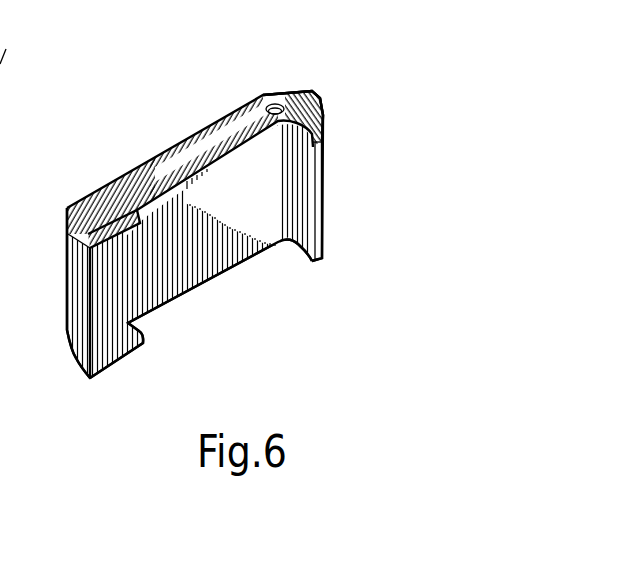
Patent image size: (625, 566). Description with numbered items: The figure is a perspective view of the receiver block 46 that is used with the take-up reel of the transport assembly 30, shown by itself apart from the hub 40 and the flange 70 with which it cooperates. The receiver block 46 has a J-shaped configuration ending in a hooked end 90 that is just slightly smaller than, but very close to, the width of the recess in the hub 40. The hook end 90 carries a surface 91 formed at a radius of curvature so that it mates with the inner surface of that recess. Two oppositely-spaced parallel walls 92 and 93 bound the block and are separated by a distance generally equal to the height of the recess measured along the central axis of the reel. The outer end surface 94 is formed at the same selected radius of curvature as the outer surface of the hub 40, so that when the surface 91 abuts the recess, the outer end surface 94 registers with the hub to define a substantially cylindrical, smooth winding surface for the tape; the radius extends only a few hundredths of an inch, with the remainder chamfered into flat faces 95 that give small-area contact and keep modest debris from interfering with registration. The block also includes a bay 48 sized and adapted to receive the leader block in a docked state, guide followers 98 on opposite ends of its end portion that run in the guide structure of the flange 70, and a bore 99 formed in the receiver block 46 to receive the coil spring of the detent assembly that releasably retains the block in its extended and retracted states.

The transport assembly 30 is at (0, 70).
The hub 40 is at (9, 392).
The receiver block 46 is at (311, 39).
The bay 48 is at (211, 248).
The flange 70 is at (0, 193).
The hooked end 90 is at (312, 93).
The surface 91 is at (323, 192).
The parallel wall 92 is at (180, 160).
The parallel wall 93 is at (160, 314).
The outer end surface 94 is at (67, 308).
The flat faces 95 is at (288, 91).
The guide followers 98 is at (108, 230).
The bore 99 is at (268, 94).